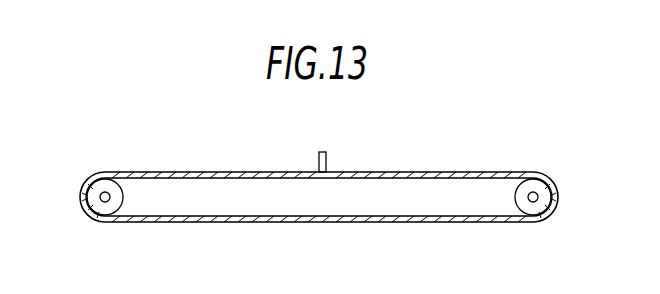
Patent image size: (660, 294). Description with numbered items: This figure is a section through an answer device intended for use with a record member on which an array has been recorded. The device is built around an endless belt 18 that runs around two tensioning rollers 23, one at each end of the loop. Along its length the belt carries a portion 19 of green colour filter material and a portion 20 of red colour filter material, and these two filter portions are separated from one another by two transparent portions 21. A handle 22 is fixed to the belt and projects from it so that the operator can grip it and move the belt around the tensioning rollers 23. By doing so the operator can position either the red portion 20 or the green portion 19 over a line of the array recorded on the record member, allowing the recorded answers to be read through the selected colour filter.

The endless belt 18 is at (548, 177).
The portion of green colour filter material 19 is at (177, 222).
The portion of red colour filter material 20 is at (440, 172).
The transparent portions 21 is at (207, 172).
The handle 22 is at (323, 152).
The tensioning rollers 23 is at (100, 202).